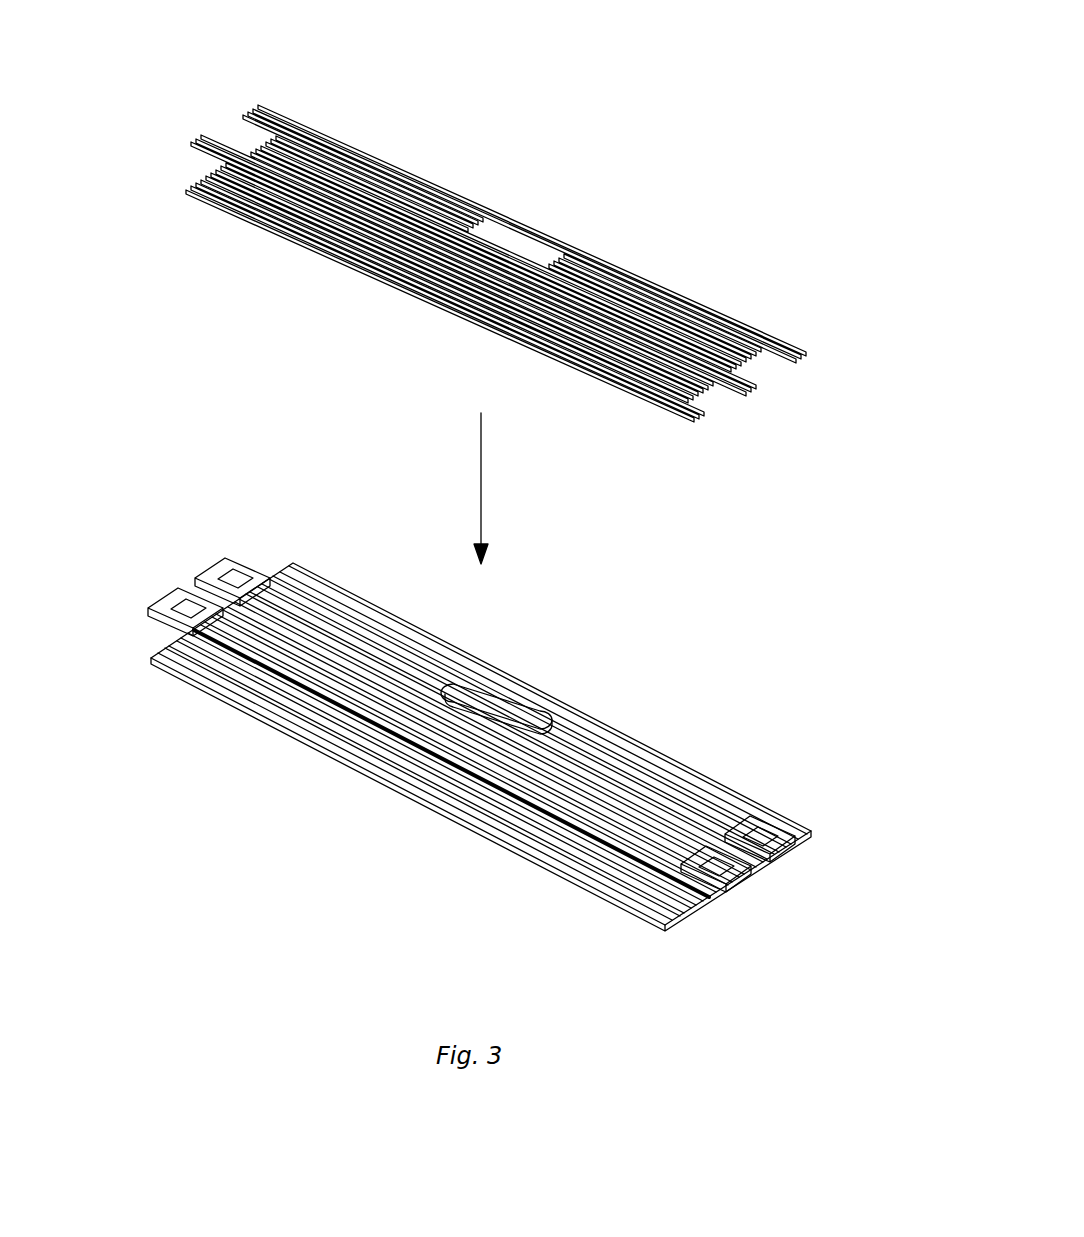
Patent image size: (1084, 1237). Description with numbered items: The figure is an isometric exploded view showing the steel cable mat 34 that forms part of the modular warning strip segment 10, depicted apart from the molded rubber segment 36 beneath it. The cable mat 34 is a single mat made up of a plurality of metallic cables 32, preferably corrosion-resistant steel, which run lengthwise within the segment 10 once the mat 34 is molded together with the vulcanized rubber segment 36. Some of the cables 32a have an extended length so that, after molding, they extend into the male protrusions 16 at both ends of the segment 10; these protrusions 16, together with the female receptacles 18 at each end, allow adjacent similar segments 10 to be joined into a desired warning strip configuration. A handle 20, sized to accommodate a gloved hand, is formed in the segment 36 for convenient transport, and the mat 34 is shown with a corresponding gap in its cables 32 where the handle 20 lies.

The modular warning strip segment 10 is at (884, 332).
The male protrusions 16 is at (205, 565).
The female receptacles 18 is at (205, 590).
The handle 20 is at (500, 692).
The metallic cables 32 is at (275, 108).
The extended-length cables 32a is at (672, 282).
The cable mat 34 is at (426, 162).
The molded rubber segment 36 is at (357, 762).